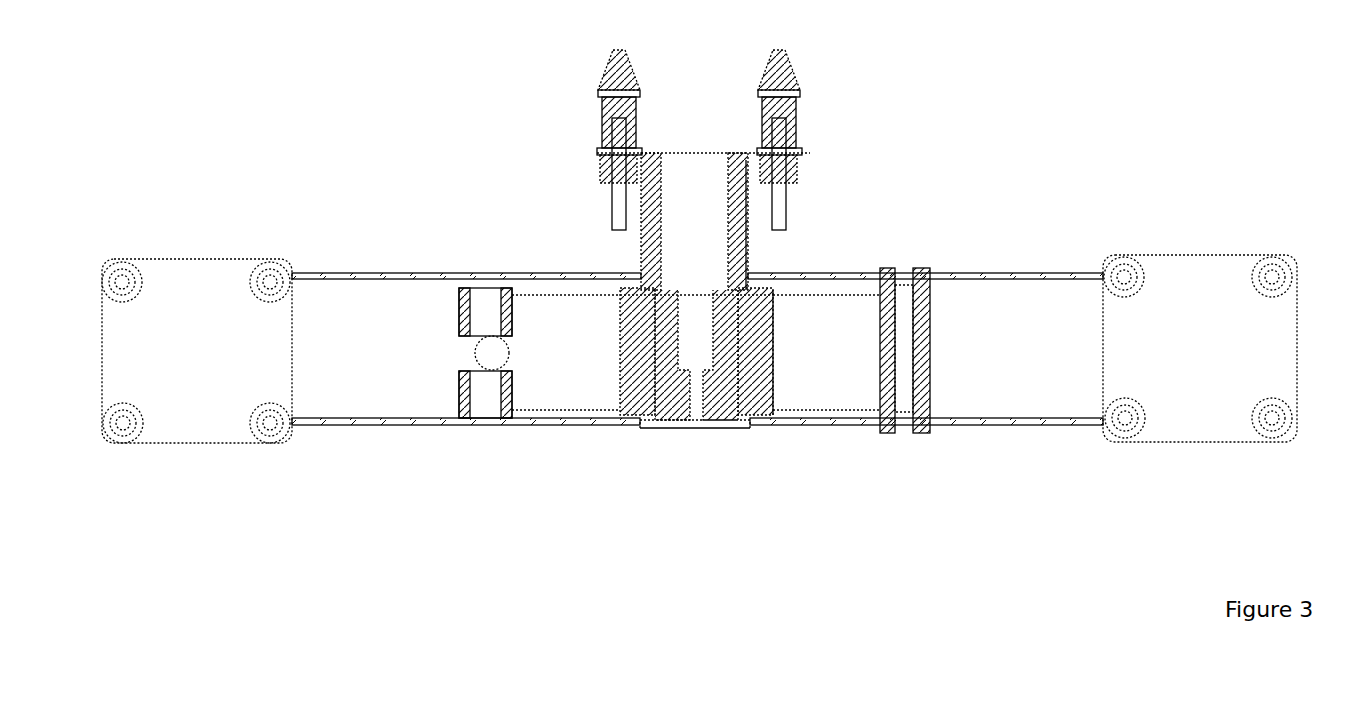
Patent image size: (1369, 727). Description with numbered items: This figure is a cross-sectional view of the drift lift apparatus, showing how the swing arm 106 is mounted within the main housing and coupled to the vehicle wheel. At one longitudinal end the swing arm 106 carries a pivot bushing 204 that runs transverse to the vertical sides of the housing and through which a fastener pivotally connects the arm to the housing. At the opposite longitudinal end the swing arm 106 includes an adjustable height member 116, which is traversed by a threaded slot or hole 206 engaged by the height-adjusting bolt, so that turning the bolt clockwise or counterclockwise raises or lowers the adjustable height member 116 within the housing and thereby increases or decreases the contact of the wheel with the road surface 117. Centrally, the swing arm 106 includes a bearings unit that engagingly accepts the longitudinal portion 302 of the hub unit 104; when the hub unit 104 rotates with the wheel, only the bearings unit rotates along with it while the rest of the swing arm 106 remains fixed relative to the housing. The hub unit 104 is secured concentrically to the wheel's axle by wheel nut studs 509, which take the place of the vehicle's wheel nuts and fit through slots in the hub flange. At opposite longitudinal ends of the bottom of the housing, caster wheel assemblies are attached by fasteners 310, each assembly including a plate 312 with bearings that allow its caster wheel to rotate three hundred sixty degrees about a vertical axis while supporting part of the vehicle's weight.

The hub unit 104 is at (784, 218).
The swing arm 106 is at (580, 420).
The adjustable height member 116 is at (493, 400).
The road surface 117 is at (696, 397).
The pivot bushing 204 is at (930, 362).
The threaded slot or hole 206 is at (478, 338).
The longitudinal portion 302 is at (745, 252).
The fasteners 310 is at (265, 298).
The plate 312 is at (225, 400).
The wheel nut studs 509 is at (797, 117).